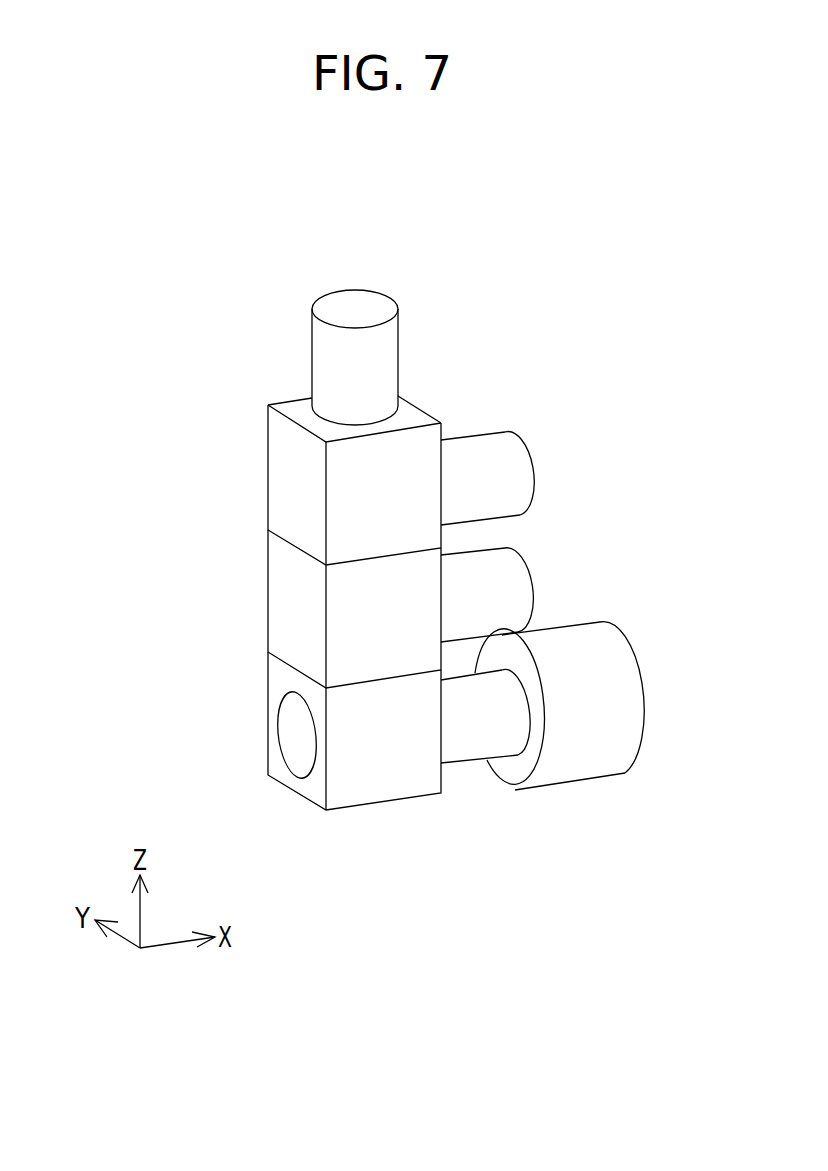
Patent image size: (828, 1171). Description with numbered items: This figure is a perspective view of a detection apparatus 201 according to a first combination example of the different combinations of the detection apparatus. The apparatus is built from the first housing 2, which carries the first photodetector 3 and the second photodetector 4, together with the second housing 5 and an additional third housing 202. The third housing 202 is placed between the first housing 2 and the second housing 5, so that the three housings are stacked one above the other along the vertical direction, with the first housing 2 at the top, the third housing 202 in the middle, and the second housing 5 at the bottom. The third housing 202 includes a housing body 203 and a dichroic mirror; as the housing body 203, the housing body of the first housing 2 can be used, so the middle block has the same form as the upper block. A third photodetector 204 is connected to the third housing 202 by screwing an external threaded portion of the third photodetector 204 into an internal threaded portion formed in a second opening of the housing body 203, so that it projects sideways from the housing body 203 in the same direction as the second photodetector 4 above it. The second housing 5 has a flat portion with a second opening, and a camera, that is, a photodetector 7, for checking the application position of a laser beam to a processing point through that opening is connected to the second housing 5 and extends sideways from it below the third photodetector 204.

The detection apparatus 201 is at (667, 227).
The first housing 2 is at (285, 464).
The third housing 202 is at (264, 577).
The housing body 203 is at (278, 633).
The second housing 5 is at (297, 787).
The first photodetector 3 is at (353, 312).
The second photodetector 4 is at (513, 468).
The third photodetector 204 is at (513, 583).
The camera (photodetector) 7 is at (617, 668).